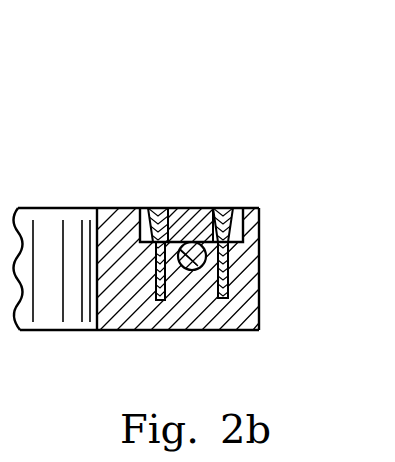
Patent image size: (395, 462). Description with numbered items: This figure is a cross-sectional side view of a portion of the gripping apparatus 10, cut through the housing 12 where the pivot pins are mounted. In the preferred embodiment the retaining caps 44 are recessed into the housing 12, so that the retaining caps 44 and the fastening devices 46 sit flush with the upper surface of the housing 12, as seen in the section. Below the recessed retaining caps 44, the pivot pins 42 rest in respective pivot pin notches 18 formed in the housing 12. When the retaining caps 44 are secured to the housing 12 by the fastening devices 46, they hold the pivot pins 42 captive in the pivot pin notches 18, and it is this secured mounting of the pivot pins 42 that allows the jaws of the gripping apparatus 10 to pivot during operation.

The gripping apparatus 10 is at (222, 117).
The housing 12 is at (253, 208).
The pivot pin notches 18 is at (194, 265).
The pivot pins 42 is at (200, 266).
The retaining caps 44 is at (183, 208).
The fastening devices 46 is at (160, 208).